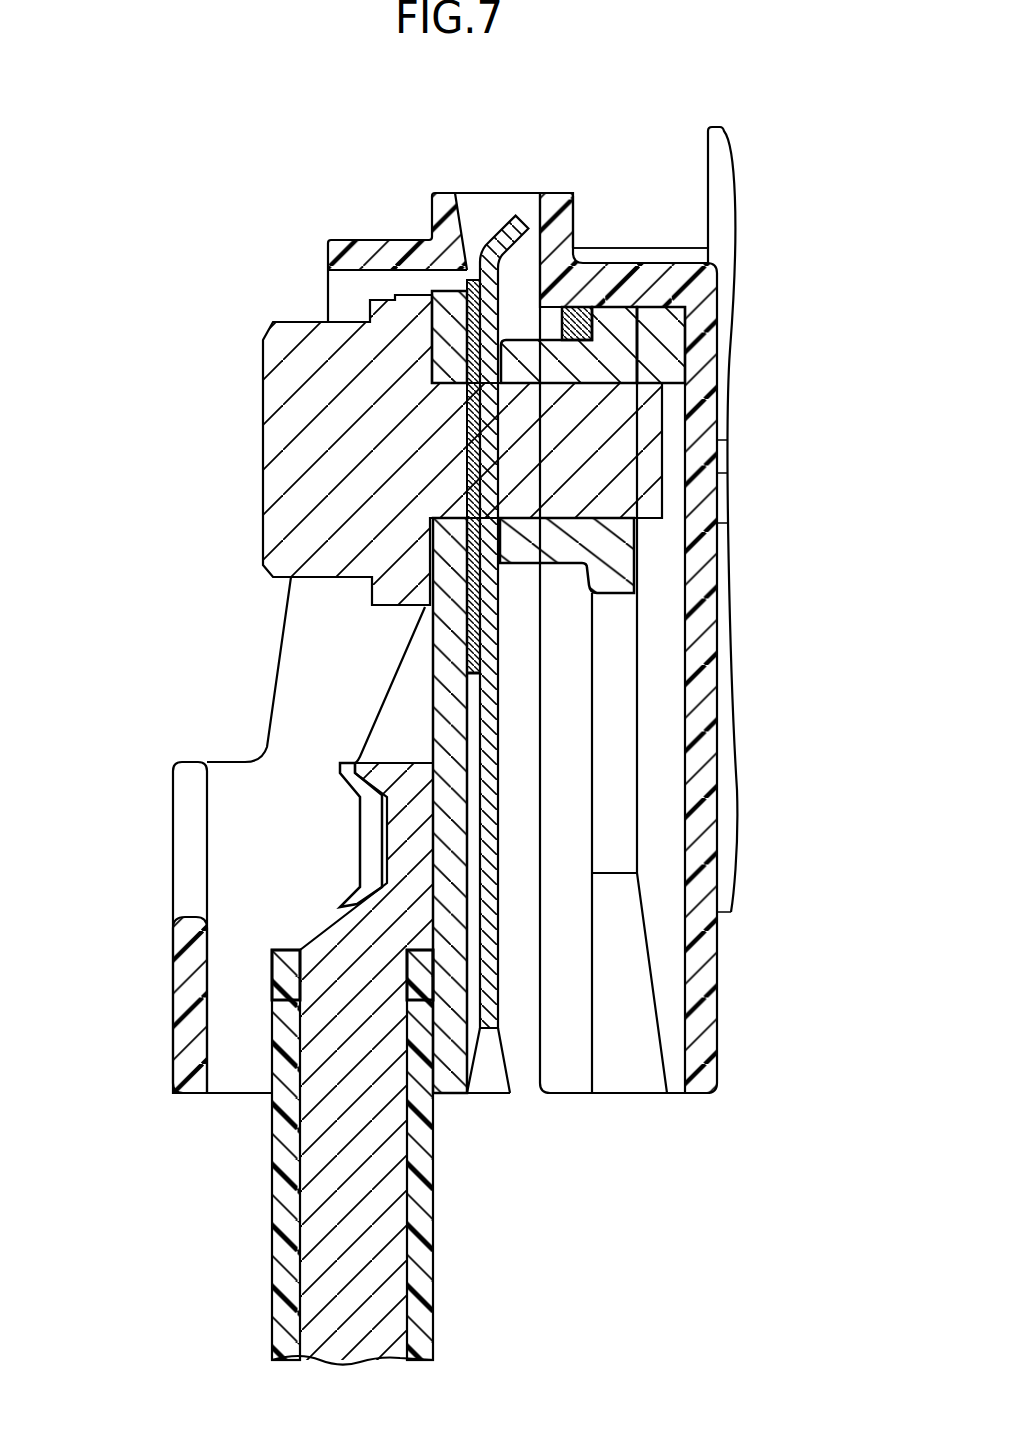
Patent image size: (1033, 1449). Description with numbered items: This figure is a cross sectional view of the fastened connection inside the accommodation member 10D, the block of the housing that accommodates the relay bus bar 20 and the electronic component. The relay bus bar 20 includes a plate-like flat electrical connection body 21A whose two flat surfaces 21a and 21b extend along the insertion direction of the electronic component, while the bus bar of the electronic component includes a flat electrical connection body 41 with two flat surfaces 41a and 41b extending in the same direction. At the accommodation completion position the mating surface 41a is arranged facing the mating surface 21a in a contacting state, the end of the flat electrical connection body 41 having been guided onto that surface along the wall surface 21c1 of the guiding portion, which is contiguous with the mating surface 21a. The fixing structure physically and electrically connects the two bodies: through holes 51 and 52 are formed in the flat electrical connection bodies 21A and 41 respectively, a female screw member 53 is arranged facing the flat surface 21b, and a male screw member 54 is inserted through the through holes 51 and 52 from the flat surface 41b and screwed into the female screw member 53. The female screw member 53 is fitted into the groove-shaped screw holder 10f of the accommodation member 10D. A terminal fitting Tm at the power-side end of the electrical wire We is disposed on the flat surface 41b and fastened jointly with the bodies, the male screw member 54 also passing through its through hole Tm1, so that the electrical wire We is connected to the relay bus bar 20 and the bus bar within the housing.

The relay bus bar 20 is at (511, 208).
The wall surface 21c1 is at (493, 225).
The flat surface 21b is at (575, 300).
The flat surface 41a is at (595, 322).
The flat surface 21a is at (467, 280).
The flat surface 41b is at (440, 334).
The through hole 51 is at (565, 368).
The through hole 52 is at (600, 380).
The through hole Tm1 is at (490, 384).
The male screw member 54 is at (263, 433).
The female screw member 53 is at (637, 563).
The flat electrical connection body 21A is at (470, 624).
The screw holder 10f is at (612, 657).
The flat electrical connection body 41 is at (432, 603).
The terminal fitting Tm is at (360, 840).
The accommodation member 10D is at (153, 921).
The electrical wire We is at (272, 1205).